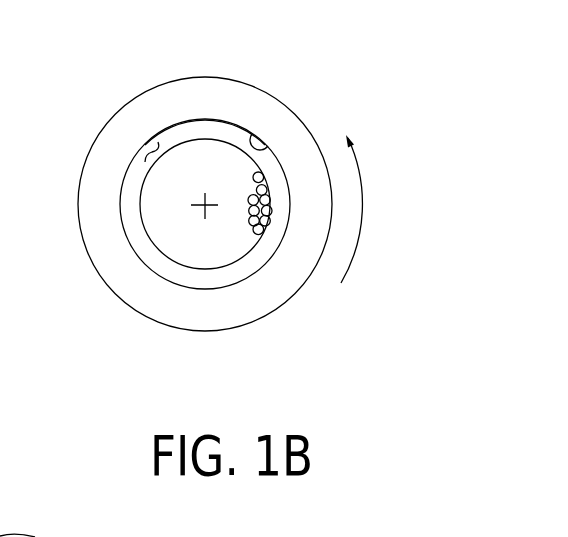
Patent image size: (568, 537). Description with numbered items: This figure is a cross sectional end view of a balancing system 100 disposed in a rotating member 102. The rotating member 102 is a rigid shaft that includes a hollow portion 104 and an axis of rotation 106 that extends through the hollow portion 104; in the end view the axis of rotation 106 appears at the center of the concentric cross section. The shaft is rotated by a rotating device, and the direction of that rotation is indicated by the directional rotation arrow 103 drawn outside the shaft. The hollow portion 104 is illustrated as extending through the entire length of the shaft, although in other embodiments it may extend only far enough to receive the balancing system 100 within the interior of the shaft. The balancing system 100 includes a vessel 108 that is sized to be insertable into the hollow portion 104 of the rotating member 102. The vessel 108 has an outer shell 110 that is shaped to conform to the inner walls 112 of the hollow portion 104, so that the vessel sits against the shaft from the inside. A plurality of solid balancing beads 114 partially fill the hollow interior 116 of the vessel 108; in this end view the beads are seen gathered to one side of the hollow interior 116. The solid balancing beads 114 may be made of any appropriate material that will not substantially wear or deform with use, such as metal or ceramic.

The balancing system 100 is at (188, 100).
The rotating member 102 is at (243, 330).
The directional rotation arrow 103 is at (363, 189).
The hollow portion 104 is at (274, 143).
The axis of rotation 106 is at (205, 212).
The vessel 108 is at (222, 118).
The outer shell 110 is at (152, 150).
The inner walls 112 is at (155, 278).
The solid balancing beads 114 is at (247, 228).
The hollow interior 116 is at (157, 207).